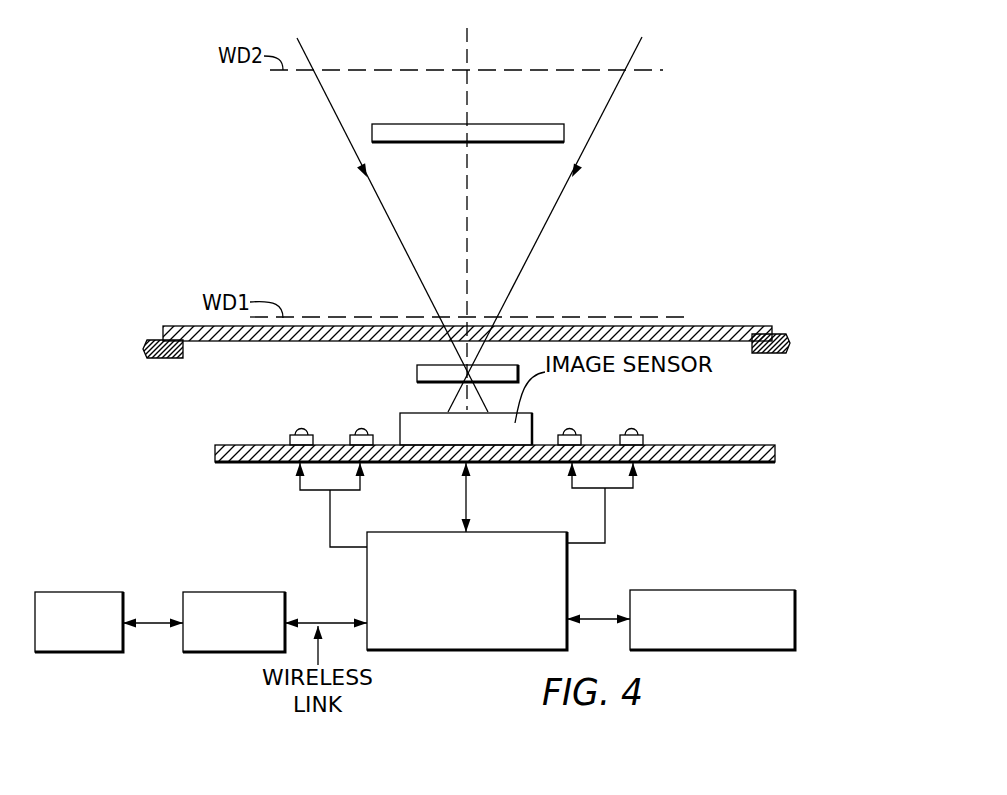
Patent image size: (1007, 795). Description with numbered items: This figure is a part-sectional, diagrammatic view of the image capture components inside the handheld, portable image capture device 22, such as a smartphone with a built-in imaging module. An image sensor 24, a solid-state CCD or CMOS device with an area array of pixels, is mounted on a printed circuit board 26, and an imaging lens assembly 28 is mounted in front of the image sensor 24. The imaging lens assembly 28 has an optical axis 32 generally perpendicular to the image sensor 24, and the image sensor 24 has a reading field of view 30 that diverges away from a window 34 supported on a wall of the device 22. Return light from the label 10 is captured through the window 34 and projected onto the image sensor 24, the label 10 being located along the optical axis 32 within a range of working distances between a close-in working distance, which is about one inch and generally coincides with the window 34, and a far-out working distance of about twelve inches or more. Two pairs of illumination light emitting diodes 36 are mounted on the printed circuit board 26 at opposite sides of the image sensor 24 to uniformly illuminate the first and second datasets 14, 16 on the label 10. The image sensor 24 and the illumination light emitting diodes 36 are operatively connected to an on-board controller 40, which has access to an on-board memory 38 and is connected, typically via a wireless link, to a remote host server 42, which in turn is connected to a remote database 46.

The label 10 is at (548, 123).
The first dataset 14 is at (480, 143).
The second dataset 16 is at (427, 143).
The image capture device 22 is at (773, 284).
The image sensor 24 is at (447, 413).
The printed circuit board 26 is at (775, 452).
The imaging lens assembly 28 is at (423, 365).
The field of view 30 is at (607, 107).
The optical axis 32 is at (468, 48).
The window 34 is at (183, 327).
The light emitting diodes 36 is at (708, 422).
The memory 38 is at (795, 618).
The controller 40 is at (367, 590).
The remote host server 42 is at (222, 592).
The remote database 46 is at (98, 592).